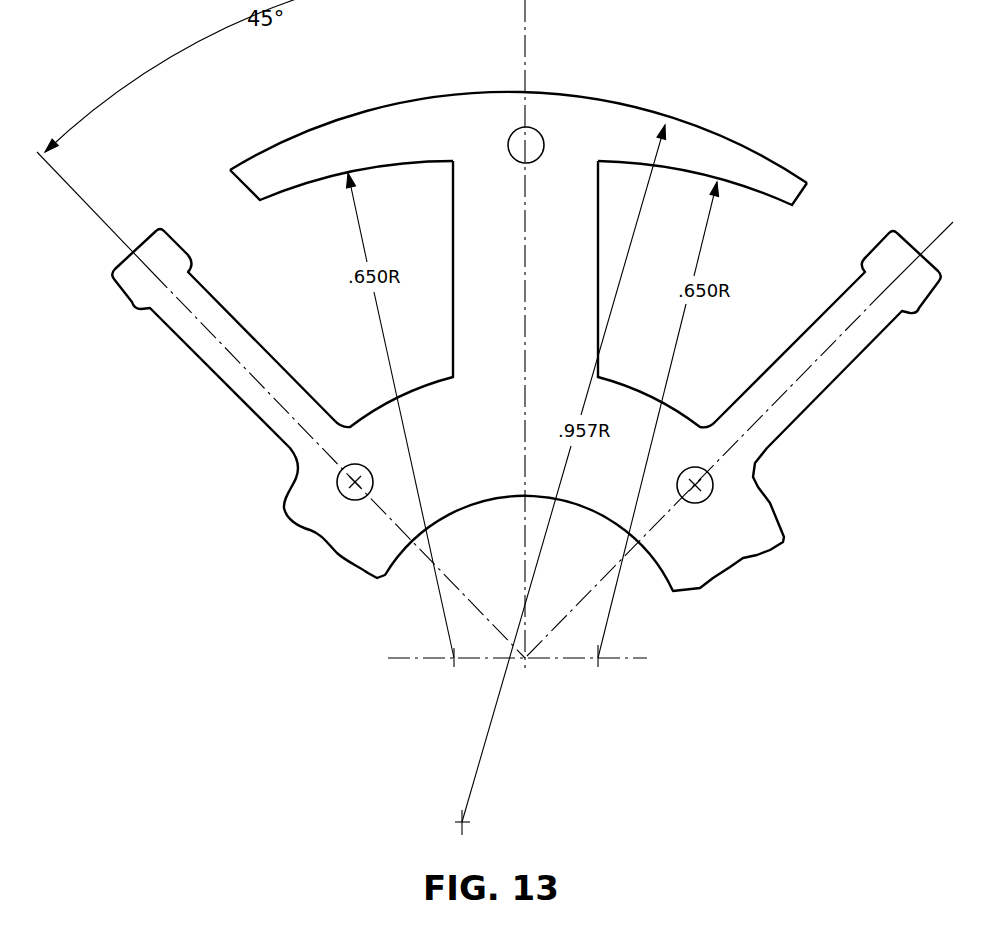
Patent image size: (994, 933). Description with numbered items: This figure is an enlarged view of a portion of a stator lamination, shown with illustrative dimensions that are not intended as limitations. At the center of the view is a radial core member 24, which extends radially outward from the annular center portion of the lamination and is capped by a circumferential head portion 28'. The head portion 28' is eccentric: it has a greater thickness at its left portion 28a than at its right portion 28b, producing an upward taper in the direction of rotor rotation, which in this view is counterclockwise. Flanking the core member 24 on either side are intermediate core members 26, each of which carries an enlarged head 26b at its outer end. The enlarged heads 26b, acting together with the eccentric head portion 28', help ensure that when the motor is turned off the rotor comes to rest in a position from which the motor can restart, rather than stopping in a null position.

The radial core member 24 is at (583, 293).
The intermediate core member 26 is at (253, 343).
The enlarged head 26b is at (152, 238).
The eccentric head portion 28' is at (518, 112).
The left portion 28a is at (272, 158).
The right portion 28b is at (775, 165).